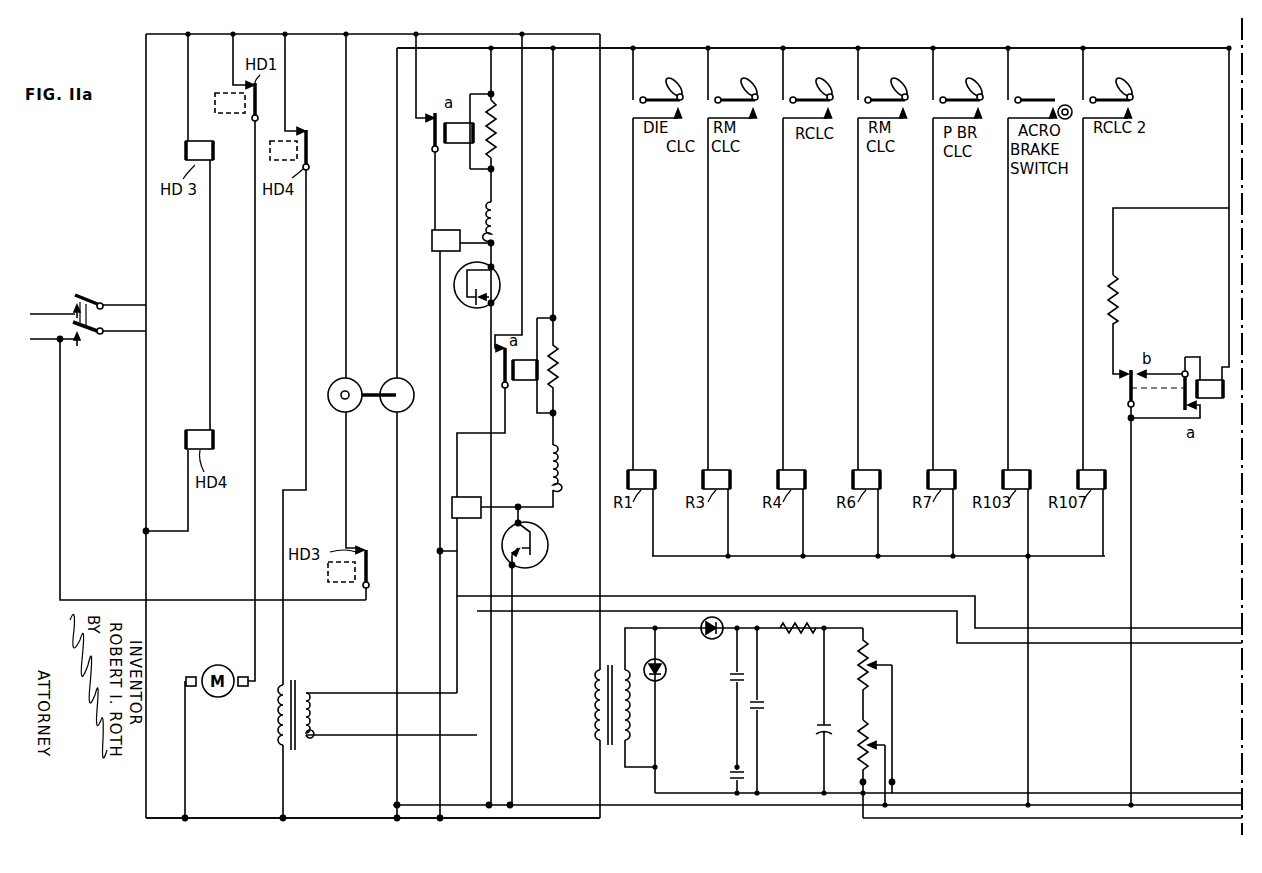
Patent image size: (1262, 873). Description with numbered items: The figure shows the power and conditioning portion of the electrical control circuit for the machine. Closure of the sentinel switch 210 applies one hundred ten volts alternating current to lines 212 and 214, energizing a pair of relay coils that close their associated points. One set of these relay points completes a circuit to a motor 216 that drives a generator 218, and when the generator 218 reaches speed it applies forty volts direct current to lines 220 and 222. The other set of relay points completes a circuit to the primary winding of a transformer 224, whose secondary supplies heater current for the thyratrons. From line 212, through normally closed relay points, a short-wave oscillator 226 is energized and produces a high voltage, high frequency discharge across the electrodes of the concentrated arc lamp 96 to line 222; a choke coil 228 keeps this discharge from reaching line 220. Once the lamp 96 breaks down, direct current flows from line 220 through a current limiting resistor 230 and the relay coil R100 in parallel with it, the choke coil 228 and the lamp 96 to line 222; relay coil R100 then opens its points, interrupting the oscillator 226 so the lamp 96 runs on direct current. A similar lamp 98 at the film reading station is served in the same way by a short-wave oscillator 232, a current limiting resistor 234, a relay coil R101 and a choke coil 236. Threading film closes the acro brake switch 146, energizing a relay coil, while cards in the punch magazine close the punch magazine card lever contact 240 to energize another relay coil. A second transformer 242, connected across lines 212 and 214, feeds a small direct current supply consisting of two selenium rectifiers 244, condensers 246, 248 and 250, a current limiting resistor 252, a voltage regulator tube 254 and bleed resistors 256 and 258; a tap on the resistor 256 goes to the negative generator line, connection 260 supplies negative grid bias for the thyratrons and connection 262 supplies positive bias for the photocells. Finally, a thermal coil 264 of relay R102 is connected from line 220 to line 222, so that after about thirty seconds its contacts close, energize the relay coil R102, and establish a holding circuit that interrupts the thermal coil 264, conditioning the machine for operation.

The concentrated arc lamp 96 is at (478, 305).
The concentrated arc lamp 98 is at (545, 562).
The acro brake switch 146 is at (1048, 100).
The sentinel switch 210 is at (81, 293).
The line 212 is at (340, 35).
The line 214 is at (266, 818).
The motor 216 is at (350, 378).
The generator 218 is at (400, 378).
The line 220 is at (1035, 50).
The line 222 is at (428, 806).
The transformer 224 is at (308, 692).
The short-wave oscillator 226 is at (432, 252).
The choke coil 228 is at (497, 220).
The current limiting resistor 230 is at (497, 138).
The short-wave oscillator 232 is at (470, 496).
The current limiting resistor 234 is at (558, 370).
The choke coil 236 is at (558, 470).
The punch magazine card lever contact 240 is at (725, 100).
The second transformer 242 is at (608, 744).
The selenium rectifiers 244 is at (705, 640).
The condenser 246 is at (732, 678).
The condenser 248 is at (732, 776).
The condenser 250 is at (760, 705).
The current limiting resistor 252 is at (796, 633).
The voltage regulator tube 254 is at (822, 736).
The bleed resistor 256 is at (870, 730).
The bleed resistor 258 is at (870, 650).
The connection 260 is at (860, 782).
The connection 262 is at (896, 783).
The thermal coil 264 is at (1118, 300).
The relay coil R100 is at (455, 145).
The relay coil R101 is at (530, 358).
The relay coil R102 is at (1210, 378).